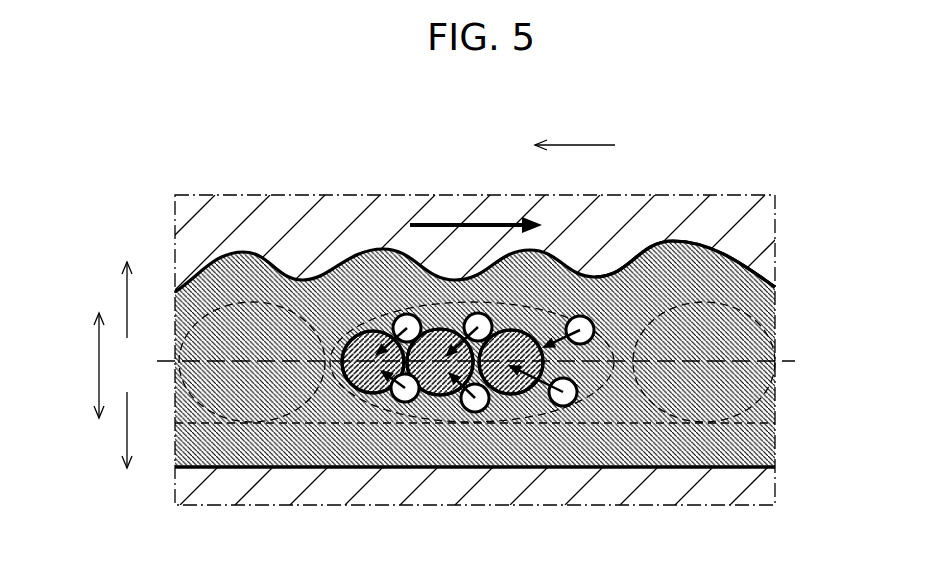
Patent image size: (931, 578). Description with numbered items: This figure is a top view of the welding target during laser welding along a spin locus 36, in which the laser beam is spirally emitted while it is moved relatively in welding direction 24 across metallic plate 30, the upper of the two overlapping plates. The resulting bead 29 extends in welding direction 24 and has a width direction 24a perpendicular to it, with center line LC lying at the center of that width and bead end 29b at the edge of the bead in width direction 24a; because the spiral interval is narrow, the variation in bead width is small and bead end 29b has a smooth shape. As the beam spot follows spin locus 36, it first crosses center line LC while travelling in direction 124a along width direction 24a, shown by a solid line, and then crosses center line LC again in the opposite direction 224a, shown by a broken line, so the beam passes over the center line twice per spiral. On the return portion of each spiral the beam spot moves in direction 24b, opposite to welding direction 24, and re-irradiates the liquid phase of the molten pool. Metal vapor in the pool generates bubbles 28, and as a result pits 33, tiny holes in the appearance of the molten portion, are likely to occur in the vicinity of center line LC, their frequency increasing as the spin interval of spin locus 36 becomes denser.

The metallic plate 30 is at (215, 238).
The bead 29 is at (293, 295).
The bead end 29b is at (690, 240).
The welding direction 24 is at (458, 223).
The direction opposite to welding direction 24b is at (558, 145).
The direction along width direction 124a is at (127, 297).
The width direction 24a is at (99, 358).
The direction opposite to direction 124a 224a is at (128, 443).
The spin locus 36 is at (707, 412).
The pits 33 is at (360, 395).
The bubbles 28 is at (398, 407).
The center line LC is at (782, 358).